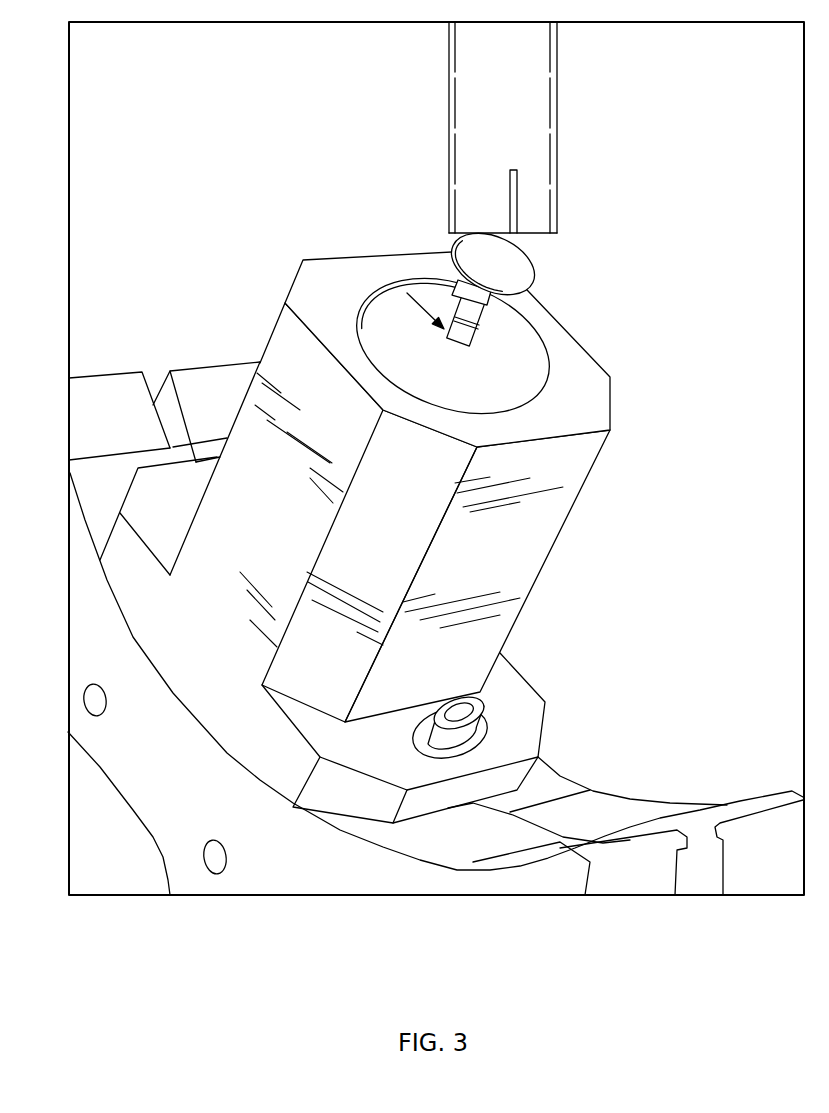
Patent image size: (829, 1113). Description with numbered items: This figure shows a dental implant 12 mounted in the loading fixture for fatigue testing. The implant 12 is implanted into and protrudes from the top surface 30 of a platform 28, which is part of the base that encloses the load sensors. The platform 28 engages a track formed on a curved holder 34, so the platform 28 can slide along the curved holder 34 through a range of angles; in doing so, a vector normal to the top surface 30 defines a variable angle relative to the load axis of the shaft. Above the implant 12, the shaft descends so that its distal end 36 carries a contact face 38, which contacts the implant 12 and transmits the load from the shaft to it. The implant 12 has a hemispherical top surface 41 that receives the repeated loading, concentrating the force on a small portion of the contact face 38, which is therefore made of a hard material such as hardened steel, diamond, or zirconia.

The dental implant 12 is at (523, 292).
The platform 28 is at (573, 493).
The top surface 30 is at (587, 408).
The curved holder 34 is at (80, 622).
The distal end 36 is at (580, 123).
The contact face 38 is at (455, 243).
The hemispherical top surface 41 is at (507, 258).